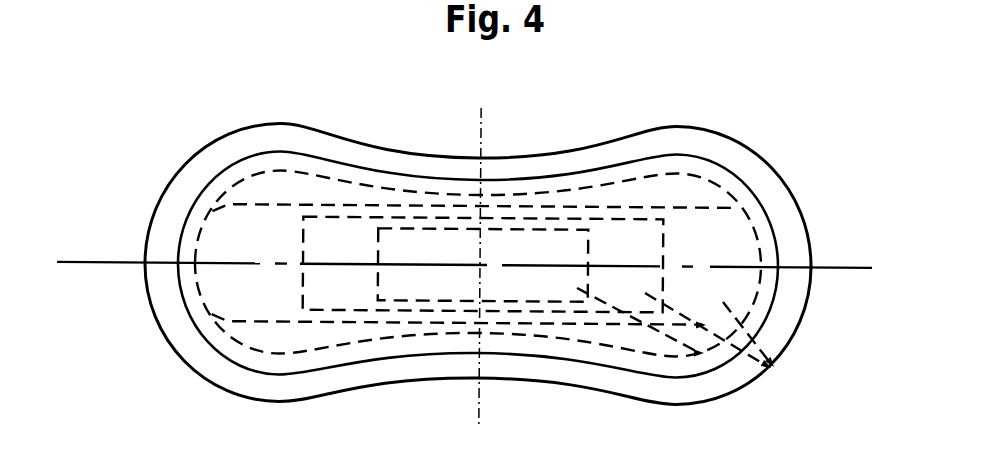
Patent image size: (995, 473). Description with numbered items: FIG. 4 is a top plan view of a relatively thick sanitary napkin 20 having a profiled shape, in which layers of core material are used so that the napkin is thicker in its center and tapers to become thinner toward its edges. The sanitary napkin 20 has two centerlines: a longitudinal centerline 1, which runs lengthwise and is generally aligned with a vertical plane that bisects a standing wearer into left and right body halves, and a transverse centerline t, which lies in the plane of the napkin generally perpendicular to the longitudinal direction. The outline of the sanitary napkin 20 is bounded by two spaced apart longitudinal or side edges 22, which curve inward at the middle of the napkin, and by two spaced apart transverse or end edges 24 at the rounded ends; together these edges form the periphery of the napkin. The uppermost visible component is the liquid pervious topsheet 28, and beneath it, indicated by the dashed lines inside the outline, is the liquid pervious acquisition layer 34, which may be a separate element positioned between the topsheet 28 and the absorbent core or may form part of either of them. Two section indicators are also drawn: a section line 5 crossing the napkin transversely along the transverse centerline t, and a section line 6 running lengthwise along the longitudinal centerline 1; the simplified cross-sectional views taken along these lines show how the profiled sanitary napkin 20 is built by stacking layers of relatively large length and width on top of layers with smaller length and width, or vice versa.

The sanitary napkin 20 is at (665, 112).
The longitudinal side edges 22 is at (552, 153).
The transverse end edges 24 is at (145, 280).
The liquid pervious topsheet 28 is at (723, 220).
The liquid pervious acquisition layer 34 is at (774, 368).
The longitudinal centerline 1 is at (863, 268).
The transverse centerline t is at (480, 123).
The section line 5— 5 is at (480, 108).
The section line 6— 6 is at (57, 262).